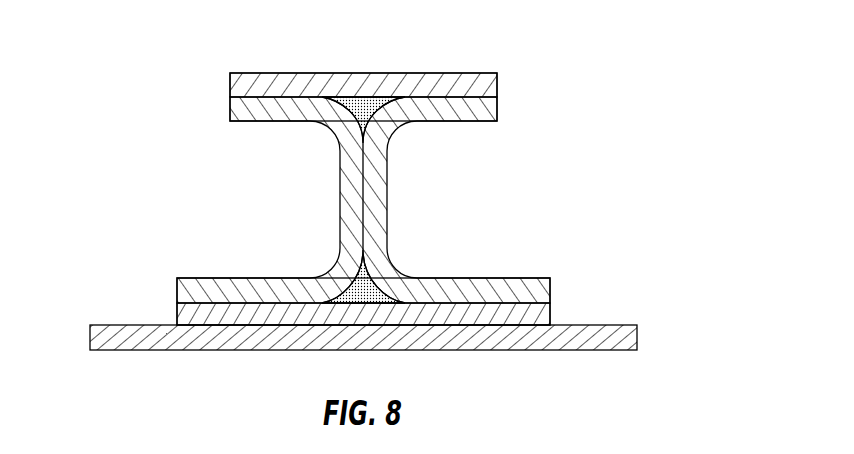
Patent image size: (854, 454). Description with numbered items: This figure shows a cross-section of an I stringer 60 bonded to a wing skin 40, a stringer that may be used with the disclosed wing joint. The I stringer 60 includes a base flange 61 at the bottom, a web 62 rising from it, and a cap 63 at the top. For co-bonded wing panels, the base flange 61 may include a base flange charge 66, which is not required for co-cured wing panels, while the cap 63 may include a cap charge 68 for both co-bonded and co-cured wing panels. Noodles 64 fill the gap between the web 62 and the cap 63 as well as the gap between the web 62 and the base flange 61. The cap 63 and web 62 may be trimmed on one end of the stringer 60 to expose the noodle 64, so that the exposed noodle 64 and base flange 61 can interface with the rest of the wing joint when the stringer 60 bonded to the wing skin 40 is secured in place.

The I stringer 60 is at (566, 42).
The wing skin 40 is at (590, 325).
The base flange 61 is at (242, 270).
The web 62 is at (332, 203).
The cap 63 is at (224, 87).
The noodle 64 is at (358, 108).
The base flange charge 66 is at (177, 318).
The cap charge 68 is at (497, 83).